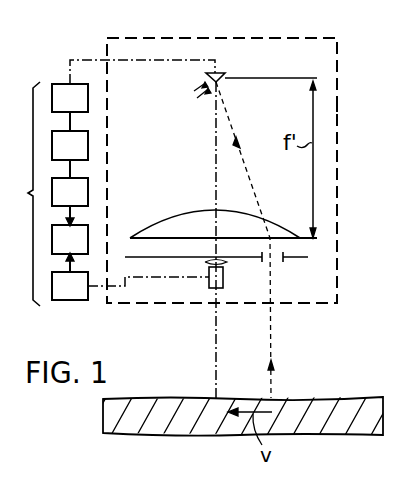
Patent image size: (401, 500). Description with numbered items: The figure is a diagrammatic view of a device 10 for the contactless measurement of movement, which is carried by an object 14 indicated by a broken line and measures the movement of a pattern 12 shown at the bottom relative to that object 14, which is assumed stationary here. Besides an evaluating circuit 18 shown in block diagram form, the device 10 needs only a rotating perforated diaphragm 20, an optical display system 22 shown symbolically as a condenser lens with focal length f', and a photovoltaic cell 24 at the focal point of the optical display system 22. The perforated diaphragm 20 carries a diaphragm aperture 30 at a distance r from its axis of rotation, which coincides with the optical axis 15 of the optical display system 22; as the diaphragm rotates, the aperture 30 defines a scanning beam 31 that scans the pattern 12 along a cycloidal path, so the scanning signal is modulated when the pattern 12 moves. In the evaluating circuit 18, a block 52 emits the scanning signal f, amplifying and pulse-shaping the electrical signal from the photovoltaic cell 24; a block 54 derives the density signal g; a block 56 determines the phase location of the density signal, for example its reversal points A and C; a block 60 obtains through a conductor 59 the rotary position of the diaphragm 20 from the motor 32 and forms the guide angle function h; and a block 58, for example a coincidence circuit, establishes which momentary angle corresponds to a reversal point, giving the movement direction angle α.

The device 10 is at (266, 71).
The pattern 12 is at (343, 396).
The object 14 is at (338, 113).
The optical axis 15 is at (214, 175).
The evaluating circuit 18 is at (23, 194).
The perforated diaphragm 20 is at (297, 260).
The optical display system 22 is at (265, 220).
The photovoltaic cell 24 is at (222, 72).
The diaphragm aperture 30 is at (263, 256).
The scanning beam 31 is at (275, 330).
The motor 32 is at (210, 283).
The block 52 is at (88, 100).
The block 54 is at (88, 146).
The block 56 is at (88, 193).
The block 58 is at (88, 237).
The conductor 59 is at (143, 279).
The block 60 is at (80, 300).